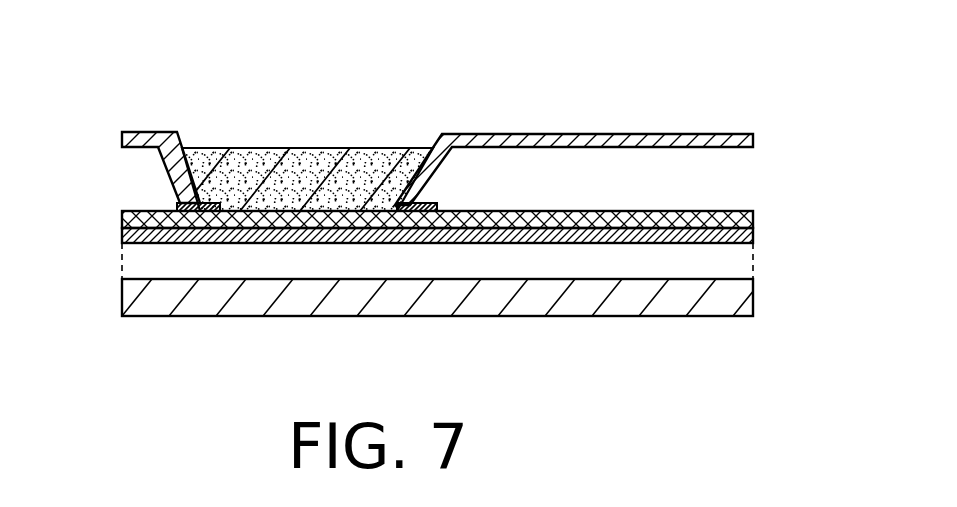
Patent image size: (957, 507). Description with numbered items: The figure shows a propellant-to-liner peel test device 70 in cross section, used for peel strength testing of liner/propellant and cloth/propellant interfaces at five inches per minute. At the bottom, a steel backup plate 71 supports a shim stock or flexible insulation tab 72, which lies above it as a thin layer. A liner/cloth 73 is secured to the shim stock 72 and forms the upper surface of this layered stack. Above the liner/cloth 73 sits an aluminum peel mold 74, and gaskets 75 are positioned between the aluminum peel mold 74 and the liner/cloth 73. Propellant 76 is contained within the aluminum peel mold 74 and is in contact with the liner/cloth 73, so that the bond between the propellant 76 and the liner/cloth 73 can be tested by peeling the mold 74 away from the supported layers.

The propellant-to-liner peel test device 70 is at (456, 87).
The steel backup plate 71 is at (703, 309).
The shim stock 72 is at (732, 242).
The liner/cloth 73 is at (730, 213).
The aluminum peel mold 74 is at (670, 138).
The gaskets 75 is at (178, 203).
The propellant 76 is at (380, 150).